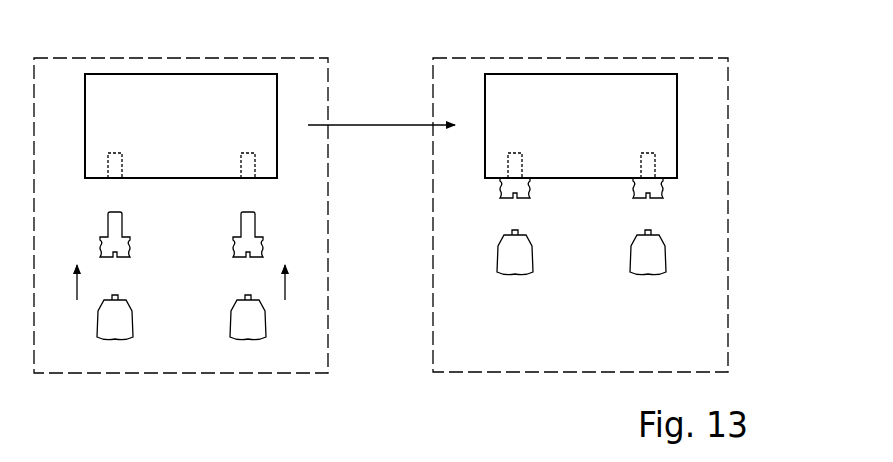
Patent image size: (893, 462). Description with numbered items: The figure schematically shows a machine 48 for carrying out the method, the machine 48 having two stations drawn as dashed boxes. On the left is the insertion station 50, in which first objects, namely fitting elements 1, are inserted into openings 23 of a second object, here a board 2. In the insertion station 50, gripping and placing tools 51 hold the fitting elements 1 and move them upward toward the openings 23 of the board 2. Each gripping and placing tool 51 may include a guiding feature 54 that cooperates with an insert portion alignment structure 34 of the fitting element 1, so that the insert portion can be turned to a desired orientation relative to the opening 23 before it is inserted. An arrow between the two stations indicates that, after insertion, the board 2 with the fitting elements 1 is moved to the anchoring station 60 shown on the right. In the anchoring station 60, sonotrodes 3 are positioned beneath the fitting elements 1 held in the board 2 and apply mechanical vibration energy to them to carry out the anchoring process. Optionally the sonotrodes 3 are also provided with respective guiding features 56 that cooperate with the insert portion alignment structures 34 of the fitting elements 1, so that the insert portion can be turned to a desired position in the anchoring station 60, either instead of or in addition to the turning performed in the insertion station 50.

The fitting element 1 is at (100, 225).
The board 2 is at (177, 93).
The sonotrode 3 is at (518, 262).
The opening 23 is at (250, 166).
The insert portion alignment structure 34 is at (115, 258).
The machine 48 is at (752, 145).
The insertion station 50 is at (212, 345).
The gripping and placing tool 51 is at (112, 318).
The guiding feature 54 is at (117, 294).
The guiding feature 56 is at (516, 230).
The anchoring station 60 is at (572, 350).